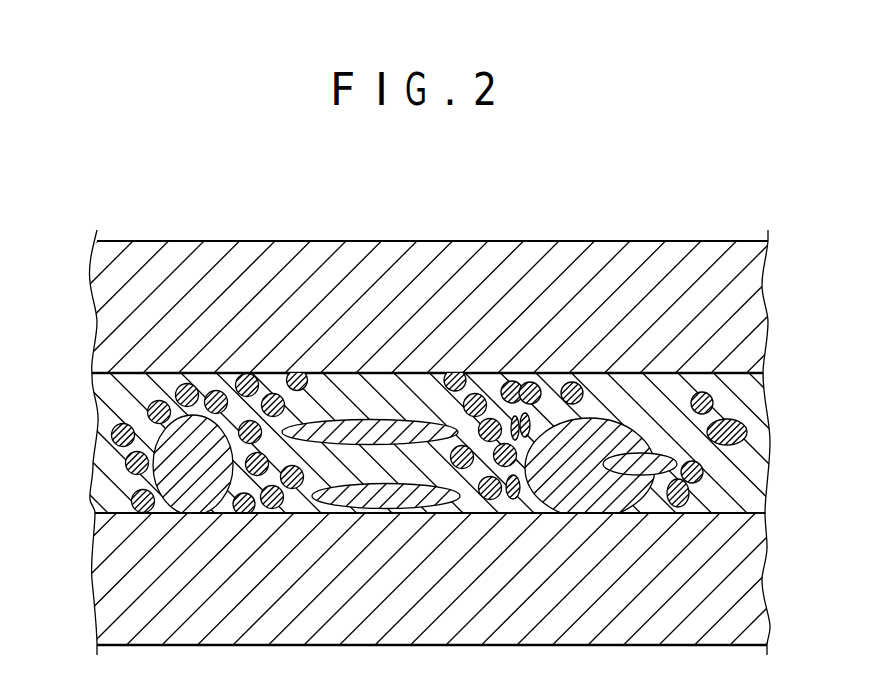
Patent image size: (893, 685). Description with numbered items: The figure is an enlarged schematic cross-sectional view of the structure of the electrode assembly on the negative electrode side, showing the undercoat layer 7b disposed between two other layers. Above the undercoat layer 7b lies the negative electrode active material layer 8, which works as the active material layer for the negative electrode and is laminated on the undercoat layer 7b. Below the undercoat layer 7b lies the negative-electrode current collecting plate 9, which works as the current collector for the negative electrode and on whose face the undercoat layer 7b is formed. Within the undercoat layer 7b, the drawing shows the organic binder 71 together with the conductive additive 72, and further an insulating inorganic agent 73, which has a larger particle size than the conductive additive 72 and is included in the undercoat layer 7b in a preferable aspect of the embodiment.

The negative electrode active material layer 8 is at (733, 307).
The negative-electrode current collecting plate 9 is at (735, 582).
The undercoat layer 7b is at (774, 374).
The organic binder 71 is at (122, 398).
The conductive additive 72 is at (108, 438).
The insulating inorganic agent 73 is at (172, 475).